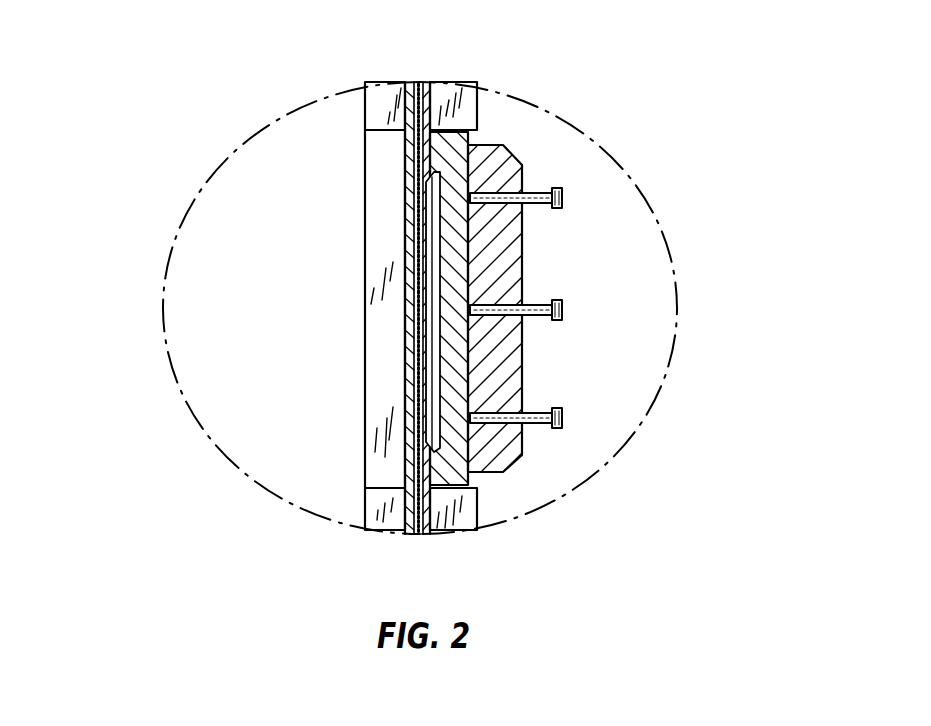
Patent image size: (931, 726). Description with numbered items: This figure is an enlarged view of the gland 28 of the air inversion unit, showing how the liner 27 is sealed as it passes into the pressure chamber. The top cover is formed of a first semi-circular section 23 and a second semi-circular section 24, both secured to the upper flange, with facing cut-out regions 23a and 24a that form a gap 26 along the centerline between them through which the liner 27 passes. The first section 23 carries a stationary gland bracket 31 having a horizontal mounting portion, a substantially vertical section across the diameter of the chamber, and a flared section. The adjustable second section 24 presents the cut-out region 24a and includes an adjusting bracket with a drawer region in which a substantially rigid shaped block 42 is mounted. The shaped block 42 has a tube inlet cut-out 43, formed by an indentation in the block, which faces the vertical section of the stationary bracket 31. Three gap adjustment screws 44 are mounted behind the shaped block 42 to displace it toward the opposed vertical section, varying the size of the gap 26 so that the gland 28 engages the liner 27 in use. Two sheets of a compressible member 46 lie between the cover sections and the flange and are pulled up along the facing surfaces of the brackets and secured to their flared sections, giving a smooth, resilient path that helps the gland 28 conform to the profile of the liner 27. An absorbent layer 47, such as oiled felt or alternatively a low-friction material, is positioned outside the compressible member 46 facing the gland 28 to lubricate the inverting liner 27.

The first semi-circular section 23 is at (207, 278).
The cut-out region 23a is at (343, 237).
The second semi-circular section 24 is at (640, 347).
The cut-out region 24a is at (502, 137).
The gap 26 is at (418, 543).
The liner 27 is at (428, 388).
The gland 28 is at (400, 335).
The stationary gland bracket 31 is at (380, 197).
The shaped block 42 is at (457, 278).
The tube inlet cut-out 43 is at (440, 357).
The gap adjustment screws 44 is at (560, 425).
The compressible member 46 is at (434, 107).
The absorbent layer 47 is at (422, 83).